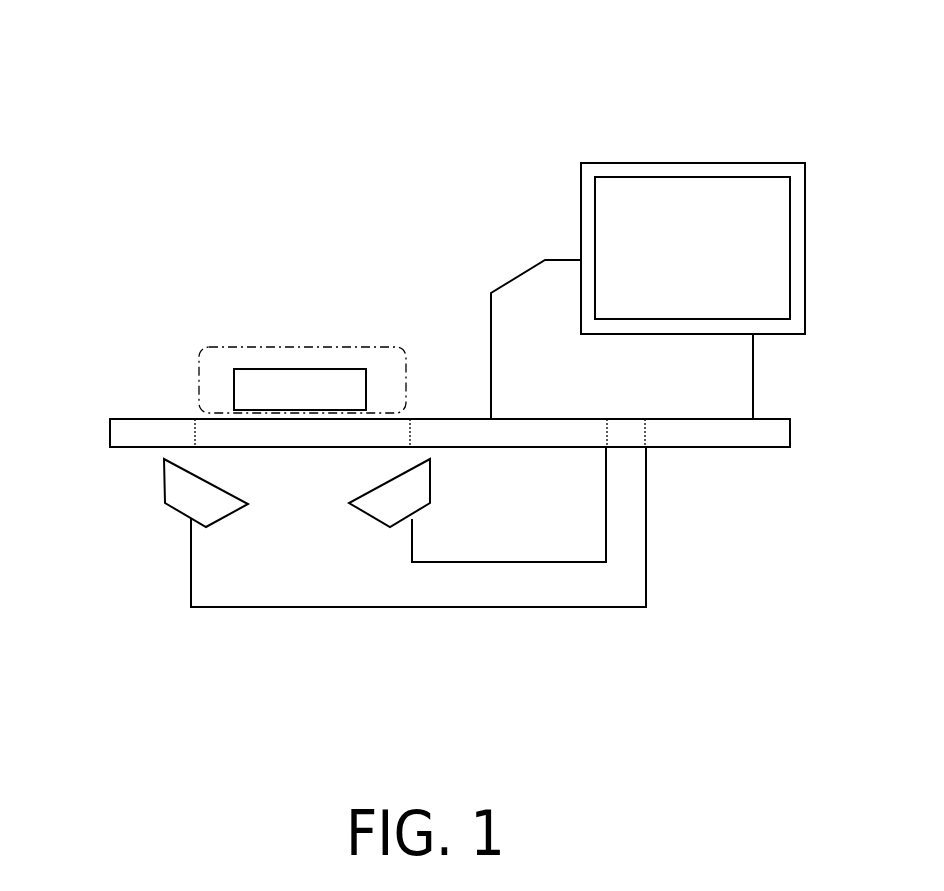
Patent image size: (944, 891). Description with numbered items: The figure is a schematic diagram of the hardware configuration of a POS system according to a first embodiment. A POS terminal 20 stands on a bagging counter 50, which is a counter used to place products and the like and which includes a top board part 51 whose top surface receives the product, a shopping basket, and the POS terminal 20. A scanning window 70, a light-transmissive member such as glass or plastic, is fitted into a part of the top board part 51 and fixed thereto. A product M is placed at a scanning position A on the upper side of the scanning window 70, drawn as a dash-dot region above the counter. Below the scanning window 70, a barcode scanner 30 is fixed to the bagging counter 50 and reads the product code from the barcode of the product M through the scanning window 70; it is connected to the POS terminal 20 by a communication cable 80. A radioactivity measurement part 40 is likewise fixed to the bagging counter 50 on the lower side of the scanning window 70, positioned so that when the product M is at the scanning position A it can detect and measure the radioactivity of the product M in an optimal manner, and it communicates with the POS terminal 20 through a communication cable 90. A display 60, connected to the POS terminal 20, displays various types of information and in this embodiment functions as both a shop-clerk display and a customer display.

The POS terminal 20 is at (528, 293).
The barcode scanner 30 is at (387, 505).
The radioactivity measurement part 40 is at (180, 493).
The bagging counter 50 is at (157, 411).
The top board part 51 is at (123, 430).
The display 60 is at (713, 232).
The scanning window 70 is at (310, 436).
The communication cable 80 is at (530, 562).
The communication cable 90 is at (485, 607).
The product M is at (258, 385).
The scanning position A is at (310, 350).